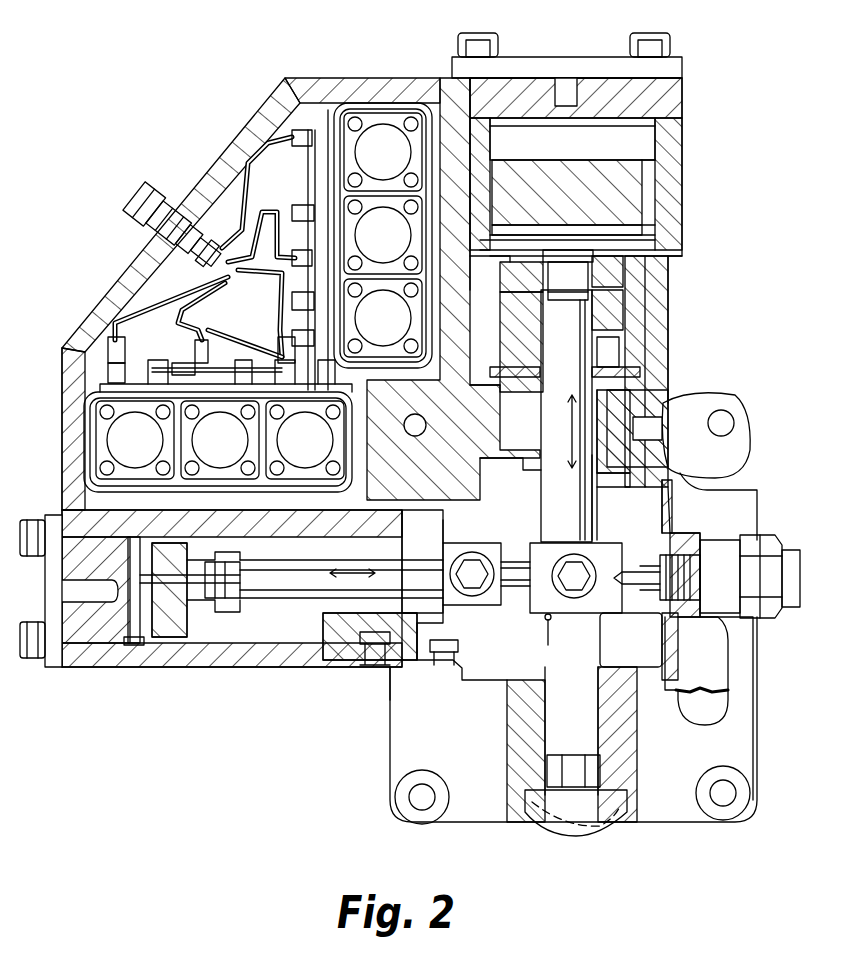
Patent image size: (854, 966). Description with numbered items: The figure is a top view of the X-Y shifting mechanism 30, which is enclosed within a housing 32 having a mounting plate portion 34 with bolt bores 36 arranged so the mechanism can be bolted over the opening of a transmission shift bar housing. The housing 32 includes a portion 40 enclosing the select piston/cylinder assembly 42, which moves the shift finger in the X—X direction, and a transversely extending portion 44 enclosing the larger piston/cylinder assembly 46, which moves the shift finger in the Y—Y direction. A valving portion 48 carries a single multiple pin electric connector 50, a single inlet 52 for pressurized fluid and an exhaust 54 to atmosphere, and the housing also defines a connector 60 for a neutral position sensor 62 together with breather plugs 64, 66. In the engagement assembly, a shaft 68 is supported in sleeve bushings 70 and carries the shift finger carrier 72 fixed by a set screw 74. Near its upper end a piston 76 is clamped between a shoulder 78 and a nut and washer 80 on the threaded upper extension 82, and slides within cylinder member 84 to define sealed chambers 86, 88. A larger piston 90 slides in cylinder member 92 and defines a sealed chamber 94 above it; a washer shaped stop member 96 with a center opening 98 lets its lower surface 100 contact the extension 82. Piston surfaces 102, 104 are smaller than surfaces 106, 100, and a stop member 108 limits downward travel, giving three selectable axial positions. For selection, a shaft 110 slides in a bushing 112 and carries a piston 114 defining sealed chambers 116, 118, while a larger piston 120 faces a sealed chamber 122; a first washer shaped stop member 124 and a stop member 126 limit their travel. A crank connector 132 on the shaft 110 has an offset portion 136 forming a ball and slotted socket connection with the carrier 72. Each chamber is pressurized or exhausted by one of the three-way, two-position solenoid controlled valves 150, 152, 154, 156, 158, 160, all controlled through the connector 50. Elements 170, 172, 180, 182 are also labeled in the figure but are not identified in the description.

The X-Y shifting mechanism 30 is at (101, 192).
The housing 32 is at (670, 218).
The mounting plate portion 34 is at (665, 822).
The bolt bores 36 is at (723, 806).
The portion 40 is at (312, 655).
The select piston/cylinder assembly 42 is at (278, 655).
The transversely extending portion 44 is at (680, 132).
The piston/cylinder assembly 46 is at (660, 190).
The valving portion 48 is at (280, 80).
The multiple pin electric connector 50 is at (160, 185).
The single inlet 52 is at (368, 78).
The pressurized fluid exhaust 54 is at (66, 432).
The connector 60 is at (762, 546).
The neutral position sensor 62 is at (696, 543).
The breather plug 64 is at (395, 760).
The breather plug 66 is at (715, 492).
The shaft 68 is at (598, 525).
The sleeve bushings 70 is at (520, 438).
The shift finger carrier 72 is at (612, 562).
The set screw 74 is at (472, 566).
The piston 76 is at (598, 322).
The shoulder 78 is at (635, 338).
The nut and washer 80 is at (598, 292).
The threaded upper extension 82 is at (640, 262).
The cylinder member 84 is at (645, 372).
The sealed chamber 86 is at (705, 396).
The sealed chamber 88 is at (625, 282).
The piston 90 is at (676, 232).
The cylinder member 92 is at (655, 200).
The sealed chamber 94 is at (655, 98).
The washer shaped stop member 96 is at (545, 198).
The center opening 98 is at (612, 212).
The lower surface 100 is at (672, 172).
The upper surface 102 is at (568, 275).
The lower surface 104 is at (540, 354).
The upper surface 106 is at (518, 158).
The stop member 108 is at (680, 415).
The shaft 110 is at (420, 568).
The bushing 112 is at (405, 505).
The piston 114 is at (291, 585).
The sealed chamber 116 is at (350, 665).
The sealed chamber 118 is at (232, 672).
The piston 120 is at (170, 672).
The sealed chamber 122 is at (128, 672).
The first washer shaped stop member 124 is at (210, 672).
The stop member 126 is at (370, 680).
The crank connector 132 is at (502, 548).
The portion 136 is at (516, 605).
The solenoid controlled valve 150 is at (399, 163).
The solenoid controlled valve 152 is at (399, 246).
The solenoid controlled valve 154 is at (399, 329).
The solenoid controlled valve 156 is at (321, 451).
The solenoid controlled valve 158 is at (236, 451).
The solenoid controlled valve 160 is at (151, 451).
The port 170 is at (650, 614).
The passage 172 is at (580, 632).
The fuel line 180 is at (325, 110).
The fuel line 182 is at (245, 185).